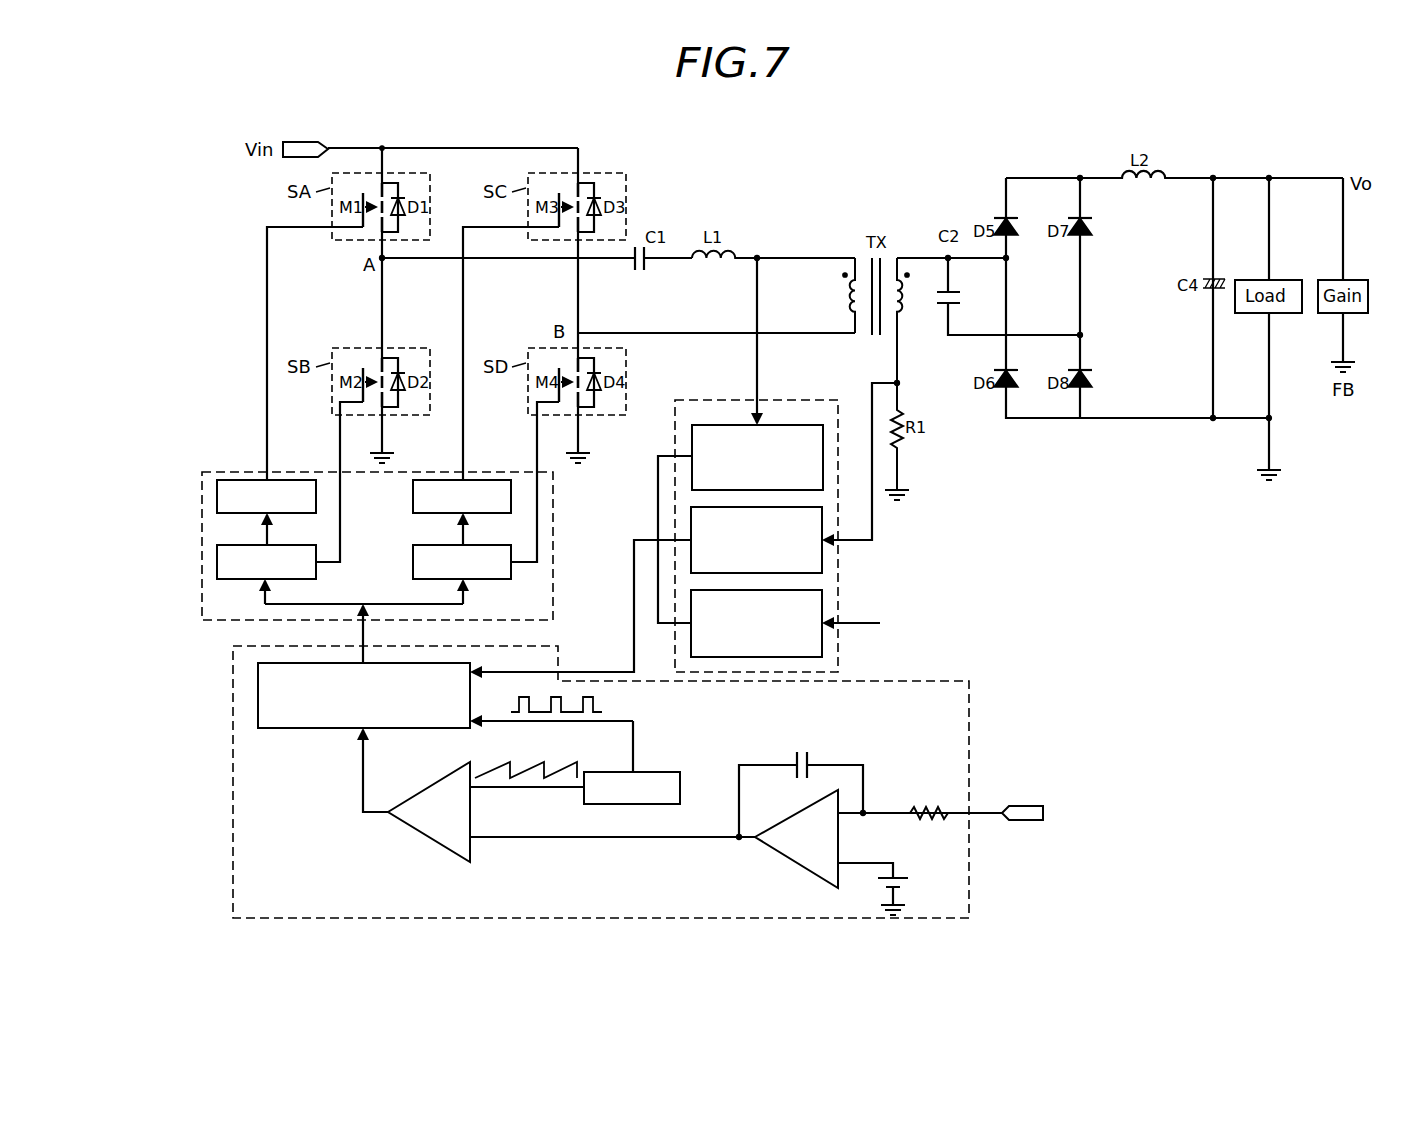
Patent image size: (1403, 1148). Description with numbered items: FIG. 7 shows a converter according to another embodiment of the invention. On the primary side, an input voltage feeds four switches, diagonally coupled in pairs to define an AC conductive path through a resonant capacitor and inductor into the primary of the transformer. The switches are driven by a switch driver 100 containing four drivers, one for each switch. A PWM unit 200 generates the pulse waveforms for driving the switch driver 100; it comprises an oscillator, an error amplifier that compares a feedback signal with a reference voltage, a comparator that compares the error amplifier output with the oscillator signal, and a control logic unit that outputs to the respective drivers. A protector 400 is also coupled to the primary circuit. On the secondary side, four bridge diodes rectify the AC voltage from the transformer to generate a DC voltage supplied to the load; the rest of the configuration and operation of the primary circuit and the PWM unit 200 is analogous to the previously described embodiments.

The switch driver 100 is at (229, 472).
The PWM unit 200 is at (939, 681).
The protector 400 is at (815, 400).